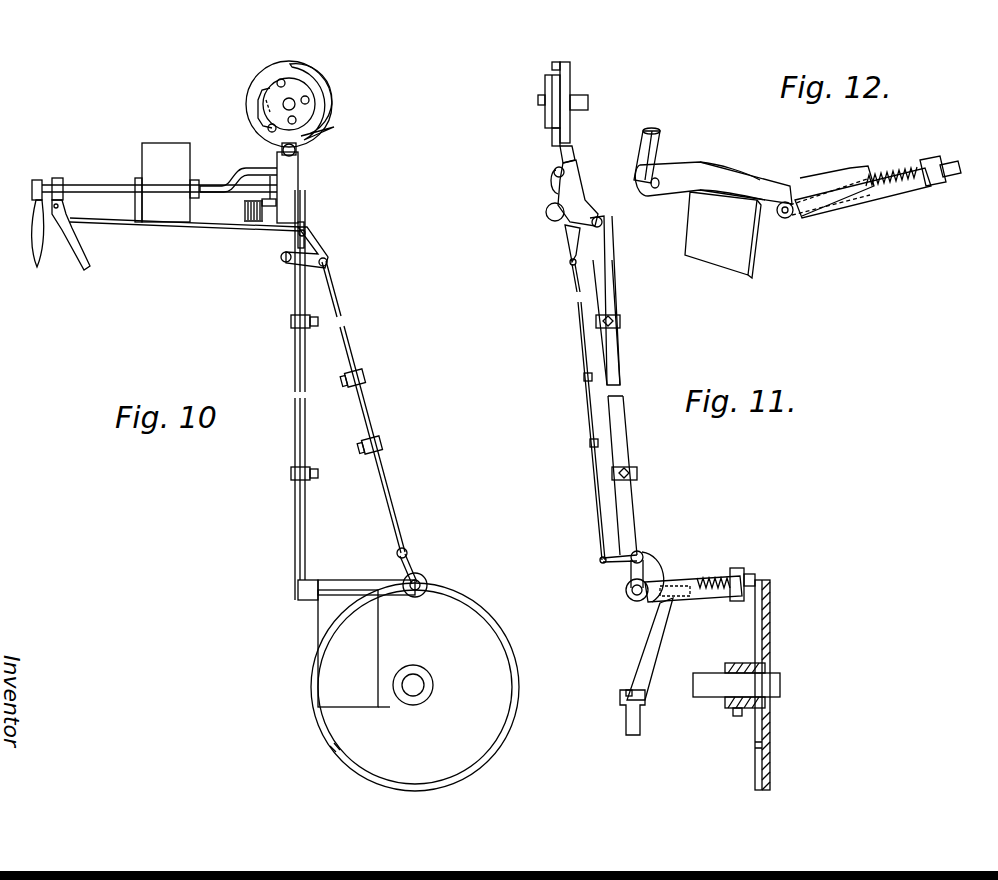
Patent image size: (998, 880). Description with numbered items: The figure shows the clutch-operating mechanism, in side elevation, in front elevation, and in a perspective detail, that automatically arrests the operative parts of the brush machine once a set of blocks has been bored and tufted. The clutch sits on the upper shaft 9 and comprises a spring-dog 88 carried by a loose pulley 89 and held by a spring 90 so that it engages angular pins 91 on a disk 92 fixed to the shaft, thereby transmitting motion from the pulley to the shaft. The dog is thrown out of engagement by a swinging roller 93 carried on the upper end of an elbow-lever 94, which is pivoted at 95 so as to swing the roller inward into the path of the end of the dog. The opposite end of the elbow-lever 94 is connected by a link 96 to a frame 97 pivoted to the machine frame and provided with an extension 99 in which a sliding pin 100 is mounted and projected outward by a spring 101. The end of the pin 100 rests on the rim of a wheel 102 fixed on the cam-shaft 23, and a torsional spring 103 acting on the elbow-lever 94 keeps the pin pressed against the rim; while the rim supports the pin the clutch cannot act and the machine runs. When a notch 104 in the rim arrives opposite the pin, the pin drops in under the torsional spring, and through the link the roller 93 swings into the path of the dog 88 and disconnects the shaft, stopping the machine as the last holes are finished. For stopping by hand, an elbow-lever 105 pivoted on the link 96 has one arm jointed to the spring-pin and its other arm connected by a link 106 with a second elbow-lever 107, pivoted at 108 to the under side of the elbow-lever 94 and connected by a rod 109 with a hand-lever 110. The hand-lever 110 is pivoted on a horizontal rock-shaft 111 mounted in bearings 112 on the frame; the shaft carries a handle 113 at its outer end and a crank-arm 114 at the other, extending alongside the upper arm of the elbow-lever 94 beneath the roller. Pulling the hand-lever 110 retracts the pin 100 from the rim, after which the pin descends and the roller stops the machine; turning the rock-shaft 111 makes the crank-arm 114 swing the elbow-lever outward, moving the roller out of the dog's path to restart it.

In FIG. 10, the upper shaft 9 is at (294, 99).
In FIG. 11, the upper shaft 9 is at (580, 102).
In FIG. 10, the cam-shaft 23 is at (425, 686).
In FIG. 11, the cam-shaft 23 is at (736, 689).
In FIG. 10, the spring-dog 88 is at (322, 129).
In FIG. 11, the spring-dog 88 is at (552, 140).
In FIG. 10, the loose pulley 89 is at (318, 86).
In FIG. 11, the loose pulley 89 is at (566, 72).
In FIG. 10, the spring 90 is at (316, 98).
In FIG. 11, the spring 90 is at (556, 62).
In FIG. 10, the angular pins 91 is at (285, 78).
In FIG. 10, the disk 92 is at (268, 92).
In FIG. 11, the disk 92 is at (545, 82).
In FIG. 10, the swinging roller 93 is at (297, 152).
In FIG. 11, the swinging roller 93 is at (570, 156).
In FIG. 10, the elbow-lever 94 is at (300, 178).
In FIG. 11, the elbow-lever 94 is at (574, 188).
In FIG. 11, the pivot 95 is at (549, 212).
In FIG. 10, the link 96 is at (306, 368).
In FIG. 11, the link 96 is at (612, 294).
In FIG. 12, the link 96 is at (658, 144).
In FIG. 10, the frame 97 is at (424, 578).
In FIG. 11, the frame 97 is at (640, 598).
In FIG. 12, the frame 97 is at (840, 210).
In FIG. 11, the extension 99 is at (714, 592).
In FIG. 12, the extension 99 is at (915, 192).
In FIG. 11, the sliding pin 100 is at (752, 574).
In FIG. 12, the sliding pin 100 is at (950, 163).
In FIG. 11, the spring 101 is at (718, 578).
In FIG. 12, the spring 101 is at (886, 178).
In FIG. 10, the wheel 102 is at (508, 657).
In FIG. 11, the wheel 102 is at (770, 634).
In FIG. 10, the torsional spring 103 is at (250, 222).
In FIG. 10, the notch 104 is at (336, 752).
In FIG. 11, the notch 104 is at (756, 746).
In FIG. 10, the elbow-lever 105 is at (408, 560).
In FIG. 11, the elbow-lever 105 is at (643, 553).
In FIG. 10, the link 106 is at (382, 474).
In FIG. 11, the link 106 is at (582, 470).
In FIG. 10, the second elbow-lever 107 is at (308, 258).
In FIG. 11, the second elbow-lever 107 is at (570, 237).
In FIG. 10, the pivot 108 is at (280, 259).
In FIG. 10, the rod 109 is at (180, 224).
In FIG. 10, the hand-lever 110 is at (82, 252).
In FIG. 10, the rock-shaft 111 is at (92, 186).
In FIG. 10, the bearings 112 is at (146, 183).
In FIG. 10, the handle 113 is at (35, 244).
In FIG. 10, the crank-arm 114 is at (244, 173).
In FIG. 11, the crank-arm 114 is at (552, 175).